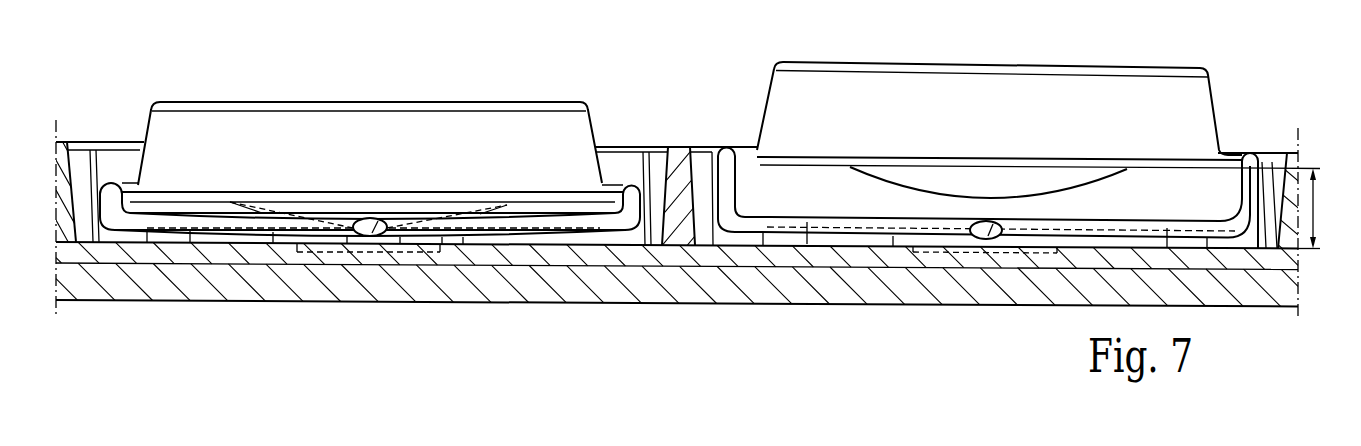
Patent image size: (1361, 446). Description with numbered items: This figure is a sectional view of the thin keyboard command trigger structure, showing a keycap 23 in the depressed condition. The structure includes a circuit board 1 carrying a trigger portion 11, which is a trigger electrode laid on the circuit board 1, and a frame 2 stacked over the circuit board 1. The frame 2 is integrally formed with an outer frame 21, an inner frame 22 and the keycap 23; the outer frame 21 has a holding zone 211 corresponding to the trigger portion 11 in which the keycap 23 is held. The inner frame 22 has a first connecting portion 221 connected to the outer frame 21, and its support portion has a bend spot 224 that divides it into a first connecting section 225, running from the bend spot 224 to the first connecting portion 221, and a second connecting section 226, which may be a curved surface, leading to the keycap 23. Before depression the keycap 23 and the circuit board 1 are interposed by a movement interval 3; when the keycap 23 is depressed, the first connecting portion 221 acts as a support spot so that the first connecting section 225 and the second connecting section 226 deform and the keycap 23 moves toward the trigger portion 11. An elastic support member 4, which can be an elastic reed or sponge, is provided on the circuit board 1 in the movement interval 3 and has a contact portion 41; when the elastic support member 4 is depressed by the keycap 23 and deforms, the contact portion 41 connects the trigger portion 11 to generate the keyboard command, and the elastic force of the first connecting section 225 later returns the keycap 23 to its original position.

The circuit board 1 is at (536, 252).
The trigger portion 11 is at (420, 257).
The frame 2 is at (666, 130).
The outer frame 21 is at (680, 154).
The holding zone 211 is at (114, 156).
The inner frame 22 is at (905, 257).
The first connecting portion 221 is at (368, 218).
The bend spot 224 is at (742, 222).
The first connecting section 225 is at (828, 236).
The second connecting section 226 is at (643, 246).
The keycap 23 is at (455, 137).
The movement interval 3 is at (1327, 233).
The elastic support member 4 is at (221, 238).
The contact portion 41 is at (355, 246).